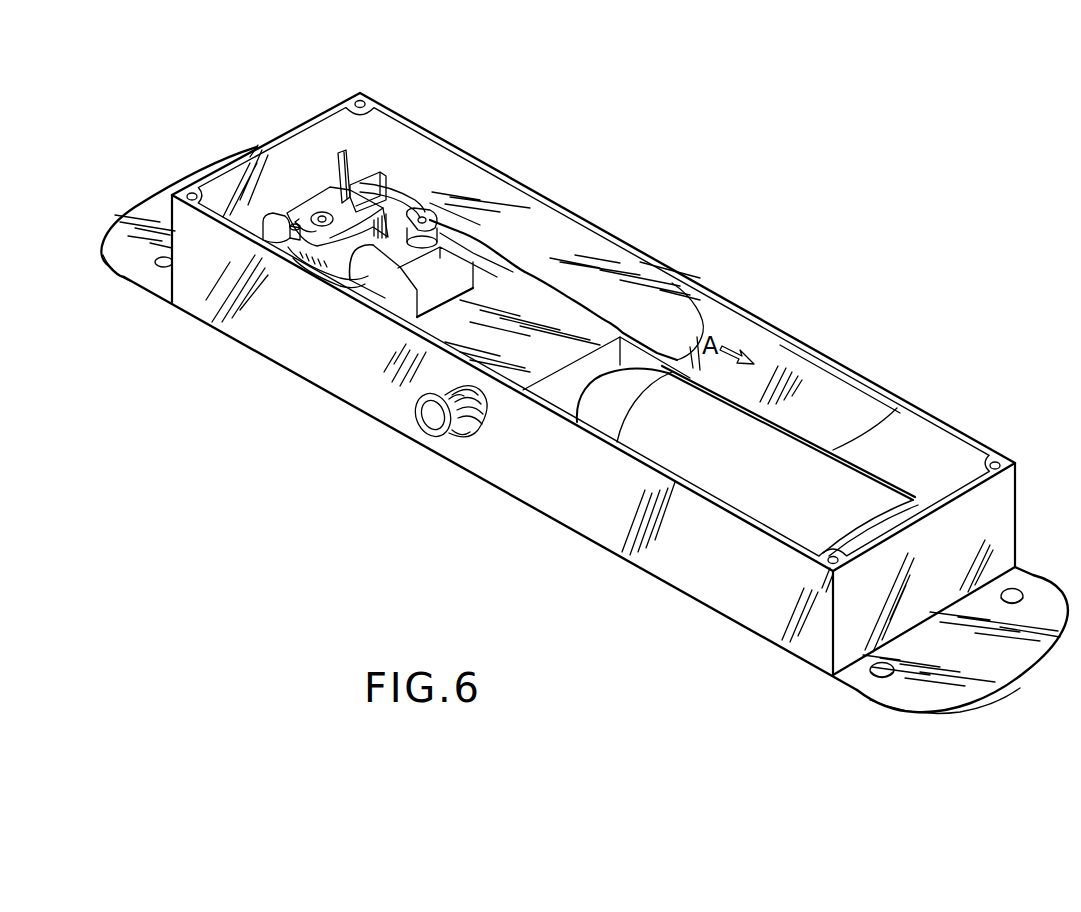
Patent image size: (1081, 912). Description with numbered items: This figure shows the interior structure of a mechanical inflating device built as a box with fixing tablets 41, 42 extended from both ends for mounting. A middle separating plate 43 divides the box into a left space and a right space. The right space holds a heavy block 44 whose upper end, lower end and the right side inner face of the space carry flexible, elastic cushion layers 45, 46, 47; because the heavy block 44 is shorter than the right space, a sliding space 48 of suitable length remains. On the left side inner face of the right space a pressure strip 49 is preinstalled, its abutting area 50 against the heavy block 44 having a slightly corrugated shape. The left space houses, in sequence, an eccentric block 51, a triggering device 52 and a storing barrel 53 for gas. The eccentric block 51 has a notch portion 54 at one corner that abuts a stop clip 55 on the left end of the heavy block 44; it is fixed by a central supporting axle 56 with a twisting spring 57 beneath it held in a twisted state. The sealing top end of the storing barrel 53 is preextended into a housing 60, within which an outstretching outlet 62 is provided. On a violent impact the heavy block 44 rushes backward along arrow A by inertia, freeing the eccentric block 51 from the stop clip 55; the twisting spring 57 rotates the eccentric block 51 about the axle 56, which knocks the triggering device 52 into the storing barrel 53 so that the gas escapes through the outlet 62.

The fixing tablet 41 is at (151, 218).
The fixing tablet 42 is at (962, 672).
The middle separating plate 43 is at (797, 430).
The heavy block 44 is at (557, 240).
The cushion layer 45 is at (395, 135).
The cushion layer 46 is at (913, 443).
The cushion layer 47 is at (863, 386).
The sliding space 48 is at (790, 377).
The pressure strip 49 is at (457, 236).
The abutting area 50 is at (493, 243).
The eccentric block 51 is at (286, 238).
The triggering device 52 is at (375, 280).
The storing barrel 53 is at (720, 490).
The notch portion 54 is at (342, 170).
The stop clip 55 is at (377, 176).
The central supporting axle 56 is at (318, 210).
The twisting spring 57 is at (343, 282).
The housing 60 is at (556, 398).
The outstretching outlet 62 is at (430, 432).